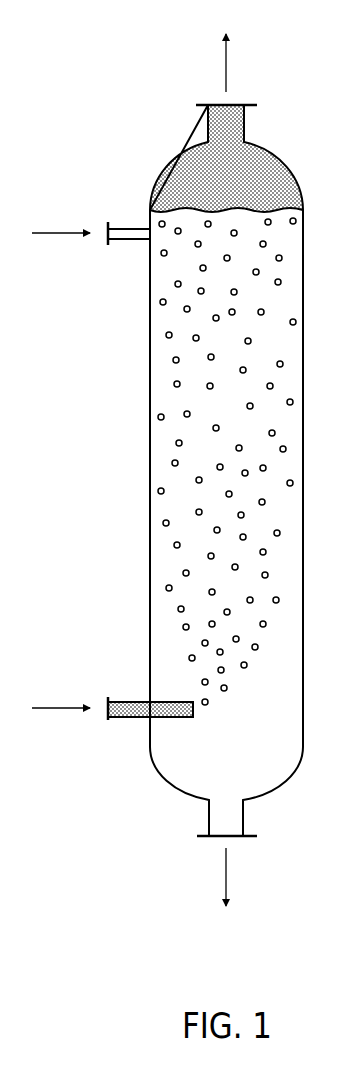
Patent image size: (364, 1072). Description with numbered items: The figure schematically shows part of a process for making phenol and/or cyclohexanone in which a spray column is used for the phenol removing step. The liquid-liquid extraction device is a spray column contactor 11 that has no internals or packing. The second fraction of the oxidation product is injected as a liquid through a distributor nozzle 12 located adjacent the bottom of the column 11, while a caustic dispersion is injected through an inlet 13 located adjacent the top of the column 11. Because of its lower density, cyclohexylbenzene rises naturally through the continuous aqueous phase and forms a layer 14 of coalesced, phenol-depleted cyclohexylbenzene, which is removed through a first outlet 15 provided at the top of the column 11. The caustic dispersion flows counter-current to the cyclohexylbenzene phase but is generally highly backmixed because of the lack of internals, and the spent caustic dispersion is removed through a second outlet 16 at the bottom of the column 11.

The spray column contactor 11 is at (149, 492).
The distributor nozzle 12 is at (128, 719).
The inlet 13 is at (128, 241).
The layer of coalesced, phenol-depleted cyclohexylbenzene 14 is at (188, 170).
The first outlet 15 is at (214, 104).
The second outlet 16 is at (208, 810).